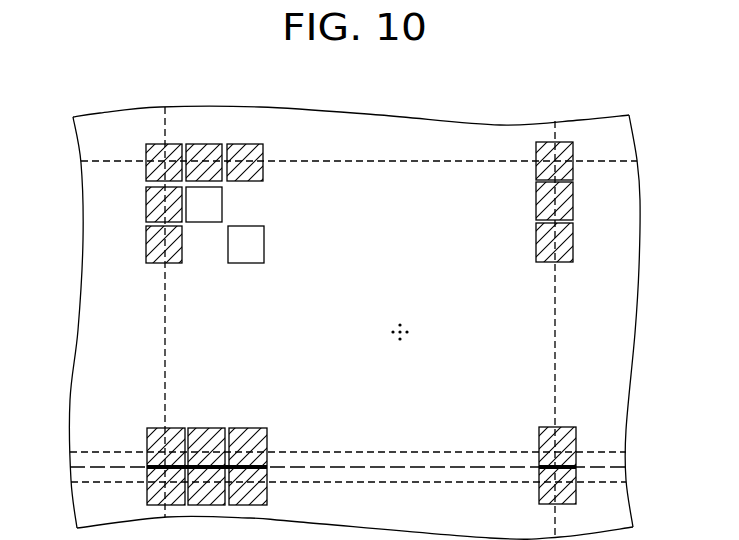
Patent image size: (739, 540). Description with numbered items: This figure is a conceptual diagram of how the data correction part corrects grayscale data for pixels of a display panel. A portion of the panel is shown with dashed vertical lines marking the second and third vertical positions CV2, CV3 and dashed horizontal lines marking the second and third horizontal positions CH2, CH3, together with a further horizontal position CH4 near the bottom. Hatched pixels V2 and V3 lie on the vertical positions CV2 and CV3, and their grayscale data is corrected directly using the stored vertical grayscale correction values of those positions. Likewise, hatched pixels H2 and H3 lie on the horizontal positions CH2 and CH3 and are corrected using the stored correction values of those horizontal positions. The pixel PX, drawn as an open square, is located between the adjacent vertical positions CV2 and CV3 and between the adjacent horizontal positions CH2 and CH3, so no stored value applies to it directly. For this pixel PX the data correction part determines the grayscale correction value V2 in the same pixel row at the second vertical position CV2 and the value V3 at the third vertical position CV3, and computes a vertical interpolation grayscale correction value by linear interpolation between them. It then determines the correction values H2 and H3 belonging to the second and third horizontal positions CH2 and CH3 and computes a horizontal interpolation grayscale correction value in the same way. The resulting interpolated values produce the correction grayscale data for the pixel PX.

The second vertical position CV2 is at (162, 297).
The third vertical position CV3 is at (552, 314).
The second horizontal position CH2 is at (334, 162).
The third horizontal position CH3 is at (324, 452).
The horizontal position CH4 is at (324, 480).
The grayscale correction value of second horizontal position H2 is at (243, 144).
The grayscale correction value of third horizontal position H3 is at (247, 428).
The grayscale correction value of second vertical position V2 is at (146, 242).
The grayscale correction value of third vertical position V3 is at (573, 240).
The pixel PX is at (245, 263).